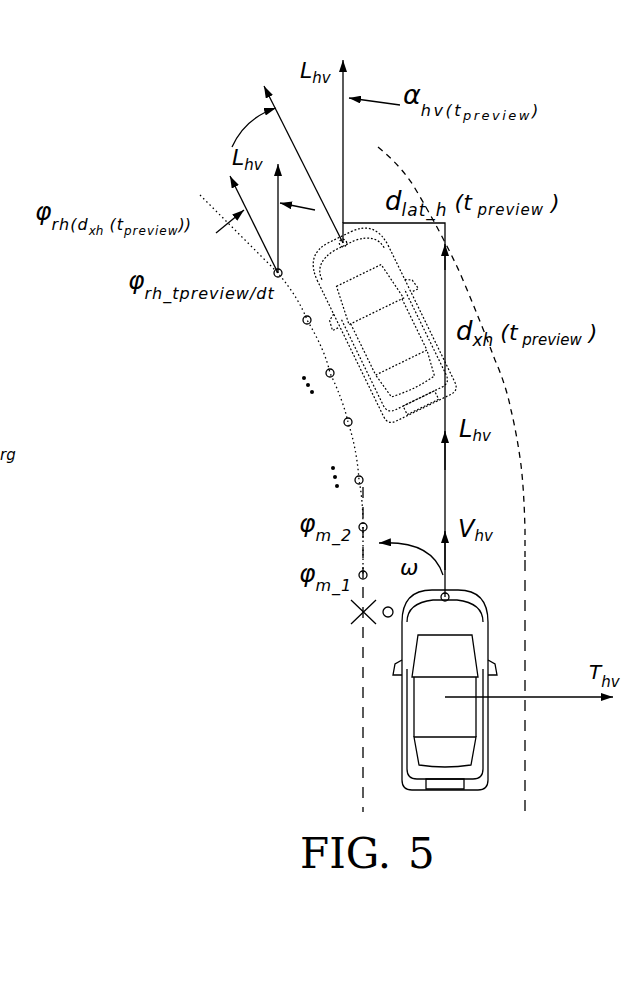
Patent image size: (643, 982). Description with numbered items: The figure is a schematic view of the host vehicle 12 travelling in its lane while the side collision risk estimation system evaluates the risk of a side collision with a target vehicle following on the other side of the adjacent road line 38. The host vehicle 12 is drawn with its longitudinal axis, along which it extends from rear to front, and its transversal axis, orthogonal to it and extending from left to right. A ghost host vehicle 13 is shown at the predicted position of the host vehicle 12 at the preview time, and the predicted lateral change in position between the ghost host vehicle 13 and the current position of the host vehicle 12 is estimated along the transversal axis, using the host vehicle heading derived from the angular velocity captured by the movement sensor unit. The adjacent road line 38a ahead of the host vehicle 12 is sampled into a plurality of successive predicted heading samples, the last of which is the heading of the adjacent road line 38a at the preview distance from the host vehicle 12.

The host vehicle 12 is at (496, 786).
The ghost host vehicle 13 is at (456, 303).
The road line 38 is at (229, 345).
The adjacent road line 38a is at (309, 420).